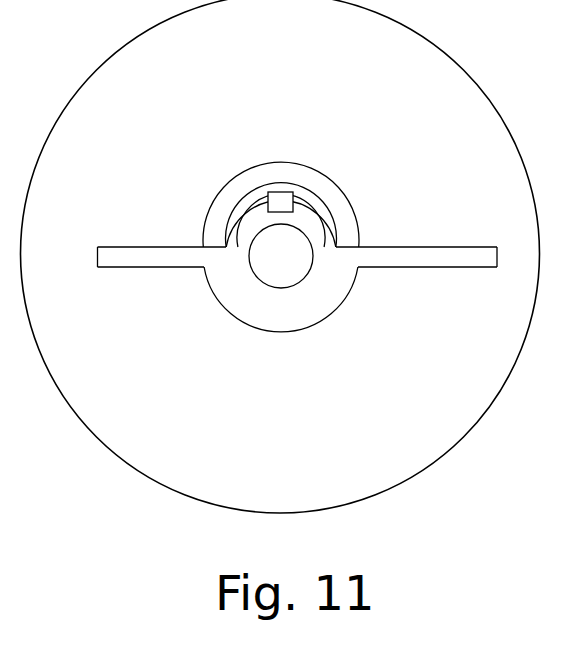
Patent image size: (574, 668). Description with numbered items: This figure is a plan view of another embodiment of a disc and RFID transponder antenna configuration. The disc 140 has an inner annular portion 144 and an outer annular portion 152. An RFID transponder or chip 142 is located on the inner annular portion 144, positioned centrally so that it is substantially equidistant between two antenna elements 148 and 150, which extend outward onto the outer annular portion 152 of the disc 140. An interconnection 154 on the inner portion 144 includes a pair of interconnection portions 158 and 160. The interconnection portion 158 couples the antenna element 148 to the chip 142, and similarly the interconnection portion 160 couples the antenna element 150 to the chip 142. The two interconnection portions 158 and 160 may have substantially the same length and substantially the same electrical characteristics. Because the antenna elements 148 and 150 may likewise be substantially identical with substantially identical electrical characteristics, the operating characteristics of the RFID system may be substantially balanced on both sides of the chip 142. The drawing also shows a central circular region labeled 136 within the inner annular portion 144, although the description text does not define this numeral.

The disc 140 is at (420, 32).
The outer annular portion 152 is at (293, 92).
The inner annular portion 144 is at (312, 310).
The antenna element 148 is at (145, 260).
The antenna element 150 is at (400, 260).
The interconnection 154 is at (212, 167).
The interconnection portion 158 is at (245, 218).
The interconnection portion 160 is at (312, 213).
The RFID transponder or chip 142 is at (282, 202).
The central opening 136 is at (300, 266).